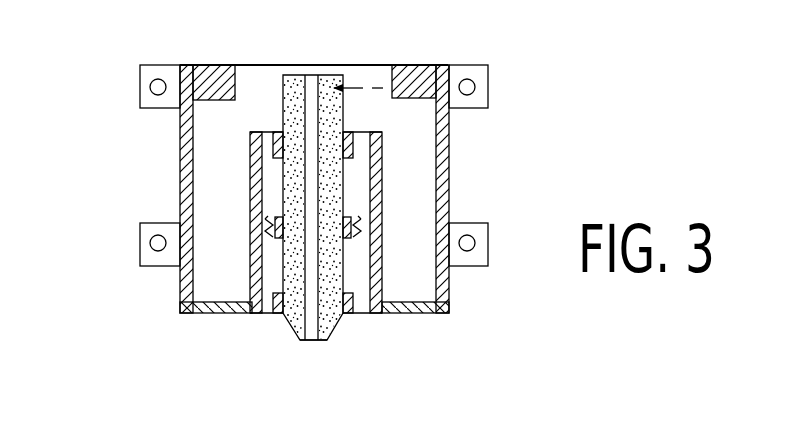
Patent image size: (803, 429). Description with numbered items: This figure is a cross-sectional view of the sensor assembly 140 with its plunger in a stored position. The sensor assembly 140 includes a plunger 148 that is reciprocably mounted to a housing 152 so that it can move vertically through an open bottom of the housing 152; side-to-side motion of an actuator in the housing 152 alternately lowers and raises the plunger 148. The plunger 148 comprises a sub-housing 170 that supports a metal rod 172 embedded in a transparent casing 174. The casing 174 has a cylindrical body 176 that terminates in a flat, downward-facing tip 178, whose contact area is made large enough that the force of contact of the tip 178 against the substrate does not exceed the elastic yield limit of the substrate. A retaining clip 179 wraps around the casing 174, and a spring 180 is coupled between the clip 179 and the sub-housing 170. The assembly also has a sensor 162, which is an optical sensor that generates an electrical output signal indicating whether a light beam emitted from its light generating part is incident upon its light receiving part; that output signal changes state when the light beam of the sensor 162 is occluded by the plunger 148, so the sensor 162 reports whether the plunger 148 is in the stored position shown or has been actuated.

The sensor assembly 140 is at (130, 168).
The plunger 148 is at (243, 281).
The housing 152 is at (443, 126).
The sensor 162 is at (207, 70).
The sub-housing 170 is at (377, 197).
The metal rod 172 is at (312, 341).
The transparent casing 174 is at (345, 323).
The cylindrical body 176 is at (277, 295).
The tip 178 is at (320, 341).
The retaining clip 179 is at (278, 238).
The spring 180 is at (358, 228).